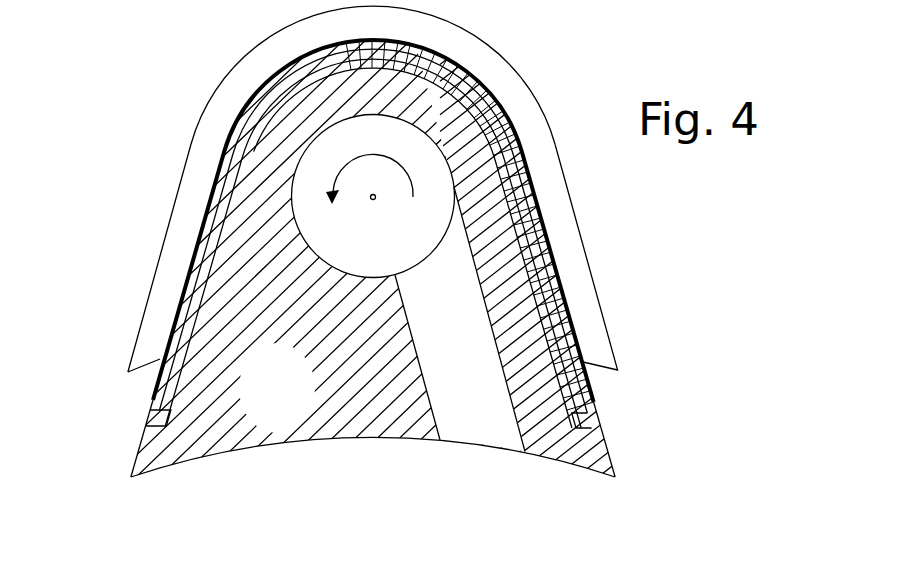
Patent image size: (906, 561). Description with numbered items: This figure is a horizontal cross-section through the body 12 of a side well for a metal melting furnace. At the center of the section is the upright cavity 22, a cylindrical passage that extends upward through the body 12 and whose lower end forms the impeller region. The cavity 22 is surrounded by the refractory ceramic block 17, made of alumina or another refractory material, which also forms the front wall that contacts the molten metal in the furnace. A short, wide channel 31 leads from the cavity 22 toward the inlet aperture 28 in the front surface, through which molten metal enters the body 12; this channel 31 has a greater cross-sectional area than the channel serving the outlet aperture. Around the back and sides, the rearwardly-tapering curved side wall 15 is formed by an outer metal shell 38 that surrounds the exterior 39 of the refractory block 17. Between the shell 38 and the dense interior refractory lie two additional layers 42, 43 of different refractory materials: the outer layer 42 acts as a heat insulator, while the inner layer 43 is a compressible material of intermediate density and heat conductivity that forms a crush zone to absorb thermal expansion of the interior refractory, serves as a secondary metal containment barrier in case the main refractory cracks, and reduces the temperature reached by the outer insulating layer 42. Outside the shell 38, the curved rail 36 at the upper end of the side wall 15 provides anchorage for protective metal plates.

The body 12 is at (526, 59).
The curved rail 36 is at (582, 293).
The layer 42 is at (233, 140).
The refractory ceramic block 17 is at (262, 398).
The upright cavity 22 is at (362, 242).
The channel 31 is at (442, 364).
The aperture 28 is at (488, 447).
The outer metal shell 38 is at (151, 384).
The layer 43 is at (143, 435).
The side wall 15 is at (602, 436).
The exterior 39 is at (611, 442).